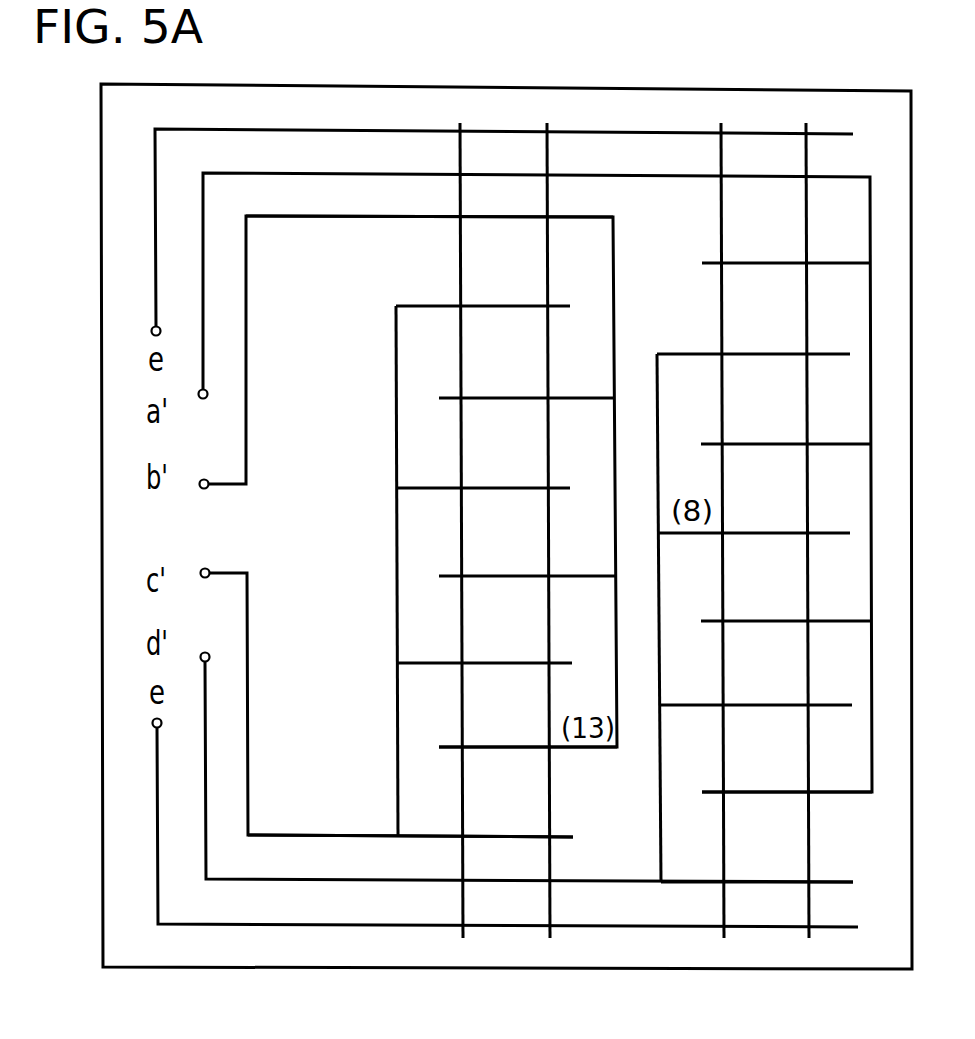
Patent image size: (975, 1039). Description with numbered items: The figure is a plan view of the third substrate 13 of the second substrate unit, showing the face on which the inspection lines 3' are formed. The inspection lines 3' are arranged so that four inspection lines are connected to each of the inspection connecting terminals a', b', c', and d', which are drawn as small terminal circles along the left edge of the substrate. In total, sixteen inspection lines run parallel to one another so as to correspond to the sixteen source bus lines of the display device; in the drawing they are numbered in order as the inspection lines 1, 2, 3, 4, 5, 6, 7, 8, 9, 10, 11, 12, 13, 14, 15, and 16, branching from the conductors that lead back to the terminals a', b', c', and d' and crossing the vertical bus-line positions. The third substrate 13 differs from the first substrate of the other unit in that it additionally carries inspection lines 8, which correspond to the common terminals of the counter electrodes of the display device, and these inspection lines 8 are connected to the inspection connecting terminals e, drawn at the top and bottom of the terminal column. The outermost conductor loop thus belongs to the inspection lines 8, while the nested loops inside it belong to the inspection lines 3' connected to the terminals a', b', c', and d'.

The inspection lines 8 is at (383, 131).
The inspection lines 3' is at (536, 405).
The third substrate 13 is at (651, 477).
The inspection line 1 is at (429, 199).
The inspection line 2 is at (768, 248).
The inspection line 3 is at (493, 288).
The inspection line 4 is at (753, 334).
The inspection line 5 is at (526, 378).
The inspection line 6 is at (770, 423).
The inspection line 7 is at (495, 468).
The inspection line 9 is at (528, 557).
The inspection line 10 is at (768, 603).
The inspection line 11 is at (503, 644).
The inspection line 12 is at (755, 686).
The inspection line 14 is at (769, 774).
The inspection line 15 is at (428, 817).
The inspection line 16 is at (757, 862).